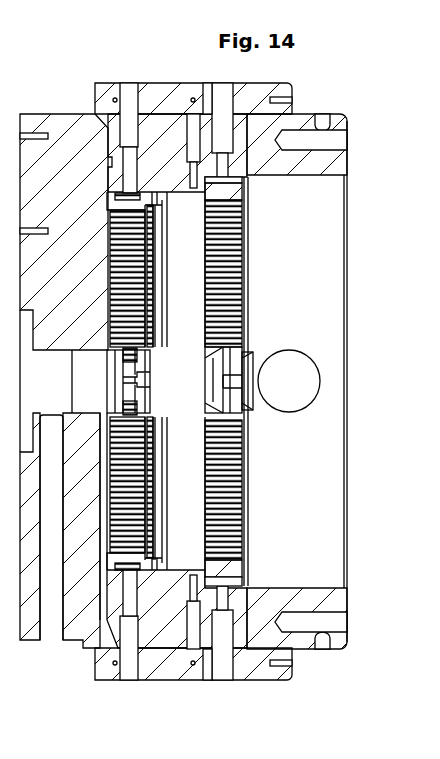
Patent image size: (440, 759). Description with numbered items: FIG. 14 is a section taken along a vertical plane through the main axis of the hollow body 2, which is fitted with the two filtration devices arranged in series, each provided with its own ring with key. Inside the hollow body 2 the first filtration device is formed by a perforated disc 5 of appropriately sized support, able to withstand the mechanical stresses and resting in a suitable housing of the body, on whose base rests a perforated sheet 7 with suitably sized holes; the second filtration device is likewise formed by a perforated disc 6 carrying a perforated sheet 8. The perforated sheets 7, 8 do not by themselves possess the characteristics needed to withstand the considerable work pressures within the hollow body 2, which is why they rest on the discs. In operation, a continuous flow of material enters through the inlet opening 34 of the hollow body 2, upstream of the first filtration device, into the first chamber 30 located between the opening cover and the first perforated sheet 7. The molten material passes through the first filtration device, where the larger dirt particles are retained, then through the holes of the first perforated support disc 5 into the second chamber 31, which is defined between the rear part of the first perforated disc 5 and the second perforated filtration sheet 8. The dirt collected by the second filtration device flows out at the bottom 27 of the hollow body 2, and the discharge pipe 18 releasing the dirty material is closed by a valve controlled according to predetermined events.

The bottom 27 is at (65, 128).
The hollow body 2 is at (165, 143).
The second chamber 31 is at (180, 222).
The first chamber 30 is at (265, 203).
The inlet opening 34 is at (297, 388).
The discharge pipe 18 is at (52, 607).
The perforated disc 6 is at (135, 550).
The perforated sheet 8 is at (152, 520).
The perforated disc 5 is at (220, 563).
The perforated sheet 7 is at (245, 517).